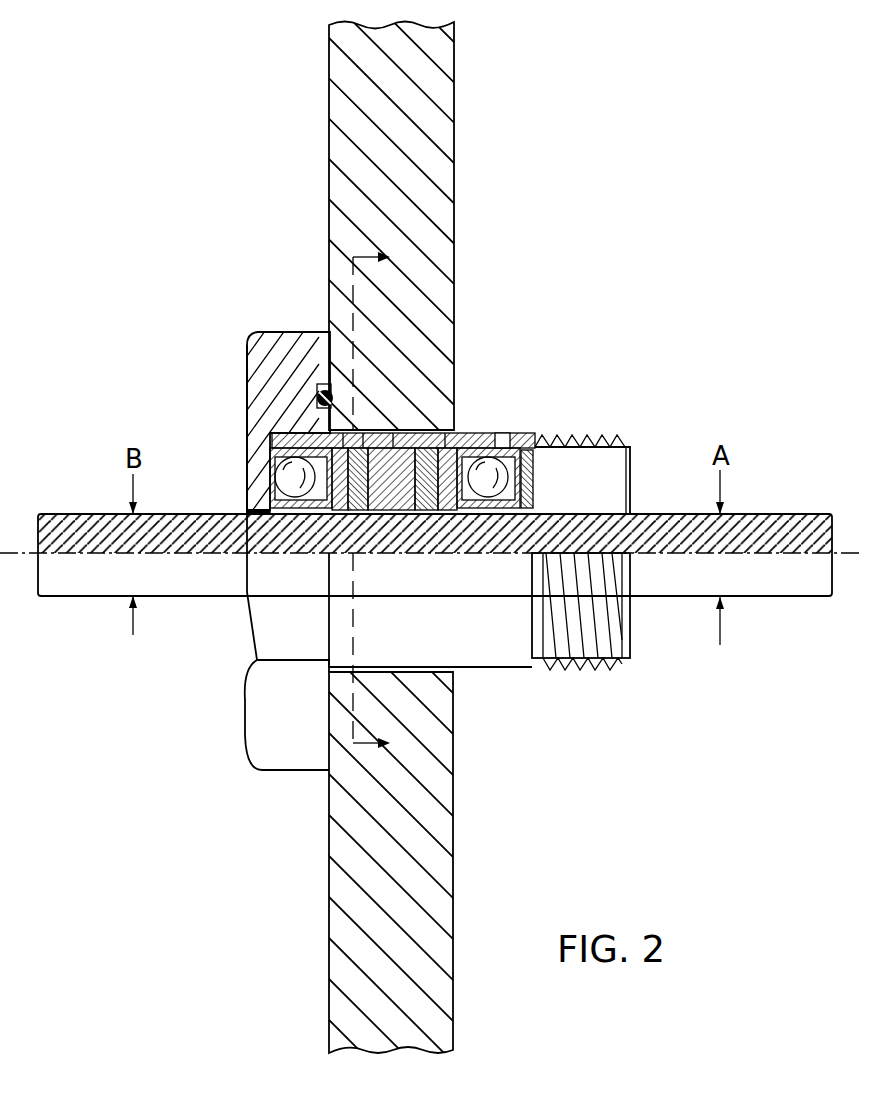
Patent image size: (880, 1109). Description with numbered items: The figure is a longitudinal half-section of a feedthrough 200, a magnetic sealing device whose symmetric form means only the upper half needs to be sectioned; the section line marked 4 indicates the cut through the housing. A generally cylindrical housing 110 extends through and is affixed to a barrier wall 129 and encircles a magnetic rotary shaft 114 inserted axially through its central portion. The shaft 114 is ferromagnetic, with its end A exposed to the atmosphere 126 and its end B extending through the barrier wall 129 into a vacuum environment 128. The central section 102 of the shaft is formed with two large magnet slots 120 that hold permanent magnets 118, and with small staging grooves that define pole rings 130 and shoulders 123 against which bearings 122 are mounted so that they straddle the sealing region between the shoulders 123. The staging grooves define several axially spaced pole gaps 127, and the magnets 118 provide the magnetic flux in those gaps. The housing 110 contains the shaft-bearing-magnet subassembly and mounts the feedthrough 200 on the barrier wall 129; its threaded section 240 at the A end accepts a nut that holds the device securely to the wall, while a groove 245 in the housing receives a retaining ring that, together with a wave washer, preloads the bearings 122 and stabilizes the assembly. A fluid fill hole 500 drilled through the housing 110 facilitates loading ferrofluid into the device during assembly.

The feedthrough 200 is at (612, 104).
The central section 102 is at (460, 557).
The housing 110 is at (247, 350).
The magnetic rotary shaft 114 is at (742, 514).
The magnets 118 is at (437, 510).
The magnet slots 120 is at (358, 448).
The bearings 122 is at (272, 478).
The shoulders 123 is at (248, 510).
The atmosphere 126 is at (787, 692).
The pole gaps 127 is at (348, 450).
The vacuum environment 128 is at (101, 691).
The barrier wall 129 is at (455, 790).
The pole rings 130 is at (452, 512).
The threaded section 240 is at (598, 442).
The groove 245 is at (541, 447).
The fluid fill hole 500 is at (506, 434).
The section line 4- 4 is at (380, 498).